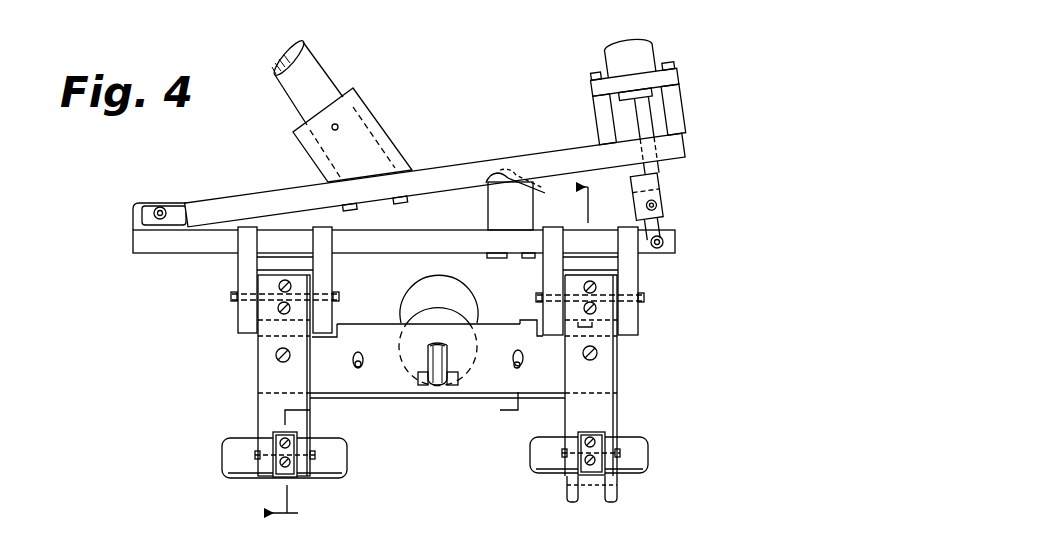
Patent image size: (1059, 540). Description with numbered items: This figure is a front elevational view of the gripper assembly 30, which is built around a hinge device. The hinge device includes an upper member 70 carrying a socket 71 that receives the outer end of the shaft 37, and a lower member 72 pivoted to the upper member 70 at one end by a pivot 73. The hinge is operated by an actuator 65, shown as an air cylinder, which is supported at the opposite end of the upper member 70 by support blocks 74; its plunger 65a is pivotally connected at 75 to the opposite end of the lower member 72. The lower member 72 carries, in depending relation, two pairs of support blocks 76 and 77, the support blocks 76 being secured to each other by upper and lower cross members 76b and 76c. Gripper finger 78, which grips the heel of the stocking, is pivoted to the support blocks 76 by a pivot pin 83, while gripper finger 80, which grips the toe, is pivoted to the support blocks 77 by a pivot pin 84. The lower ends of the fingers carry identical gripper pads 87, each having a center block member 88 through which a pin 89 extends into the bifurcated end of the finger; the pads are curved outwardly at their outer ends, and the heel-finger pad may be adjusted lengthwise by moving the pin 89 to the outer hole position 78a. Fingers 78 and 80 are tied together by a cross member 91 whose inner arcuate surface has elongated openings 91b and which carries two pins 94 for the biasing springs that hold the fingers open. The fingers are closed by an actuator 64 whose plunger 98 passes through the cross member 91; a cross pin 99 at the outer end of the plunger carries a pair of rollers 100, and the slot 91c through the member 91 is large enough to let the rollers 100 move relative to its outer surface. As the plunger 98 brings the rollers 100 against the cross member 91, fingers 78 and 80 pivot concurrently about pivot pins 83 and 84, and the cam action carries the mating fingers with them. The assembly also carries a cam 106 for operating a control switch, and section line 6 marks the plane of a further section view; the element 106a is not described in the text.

The gripper assembly 30 is at (500, 110).
The shaft 37 is at (312, 85).
The actuator 64 is at (423, 296).
The actuator 65 is at (643, 56).
The plunger 65a is at (654, 167).
The upper member 70 is at (266, 200).
The socket 71 is at (380, 128).
The lower member 72 is at (205, 242).
The pivot 73 is at (161, 205).
The support blocks 74 is at (674, 115).
The pivotal connection 75 is at (664, 242).
The support blocks 76 is at (634, 236).
The upper cross member 76b is at (610, 263).
The lower cross member 76c is at (638, 327).
The support blocks 77 is at (238, 268).
The gripper finger 78 is at (607, 416).
The outer hole position 78a is at (608, 482).
The gripper finger 80 is at (272, 412).
The pivot pin 83 is at (536, 298).
The pivot pin 84 is at (339, 298).
The gripper pads 87 is at (330, 463).
The center block member 88 is at (290, 466).
The pin 89 is at (316, 453).
The cross member 91 is at (476, 378).
The elongated openings 91b is at (355, 362).
The slot 91c is at (428, 348).
The pin member 94 is at (360, 366).
The plunger 98 is at (439, 386).
The cross pin 99 is at (420, 378).
The rollers 100 is at (453, 373).
The cam 106 is at (488, 181).
The clip block 106a is at (527, 211).
The section line 6 is at (414, 352).